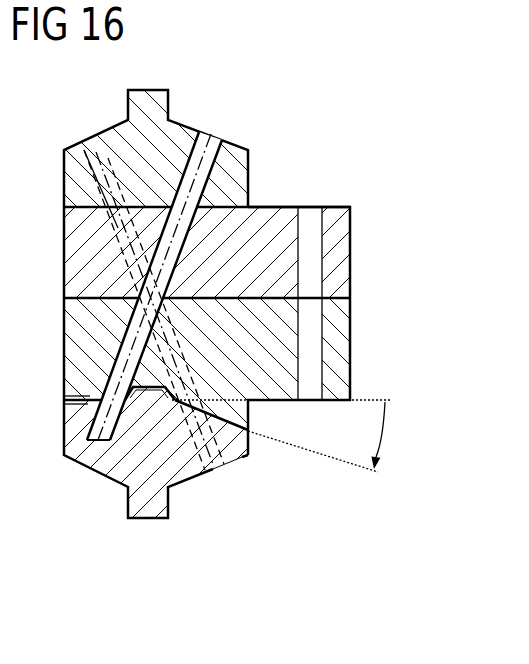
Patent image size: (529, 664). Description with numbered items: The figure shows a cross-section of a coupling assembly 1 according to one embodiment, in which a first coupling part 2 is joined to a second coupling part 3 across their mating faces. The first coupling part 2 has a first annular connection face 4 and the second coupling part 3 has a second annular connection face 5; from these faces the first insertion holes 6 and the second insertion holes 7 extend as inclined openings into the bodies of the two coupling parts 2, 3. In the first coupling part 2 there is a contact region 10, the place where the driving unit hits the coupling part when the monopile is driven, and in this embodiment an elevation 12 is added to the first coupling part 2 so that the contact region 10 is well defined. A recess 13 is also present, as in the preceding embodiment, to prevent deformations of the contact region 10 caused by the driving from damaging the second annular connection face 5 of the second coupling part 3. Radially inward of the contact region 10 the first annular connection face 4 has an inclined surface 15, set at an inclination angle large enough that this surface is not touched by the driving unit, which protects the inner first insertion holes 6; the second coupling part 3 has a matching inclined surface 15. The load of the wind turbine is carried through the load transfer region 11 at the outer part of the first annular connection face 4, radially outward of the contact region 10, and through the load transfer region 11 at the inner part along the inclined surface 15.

The coupling assembly 1 is at (288, 110).
The first coupling part 2 is at (251, 527).
The second coupling part 3 is at (329, 165).
The first annular connection face 4 is at (70, 406).
The second annular connection face 5 is at (66, 400).
The first insertion holes 6 is at (97, 442).
The second insertion holes 7 is at (213, 140).
The contact region 10 is at (195, 411).
The load transfer region 11 is at (90, 440).
The elevation 12 is at (130, 398).
The recess 13 is at (138, 383).
The inclined surface 15 is at (155, 309).